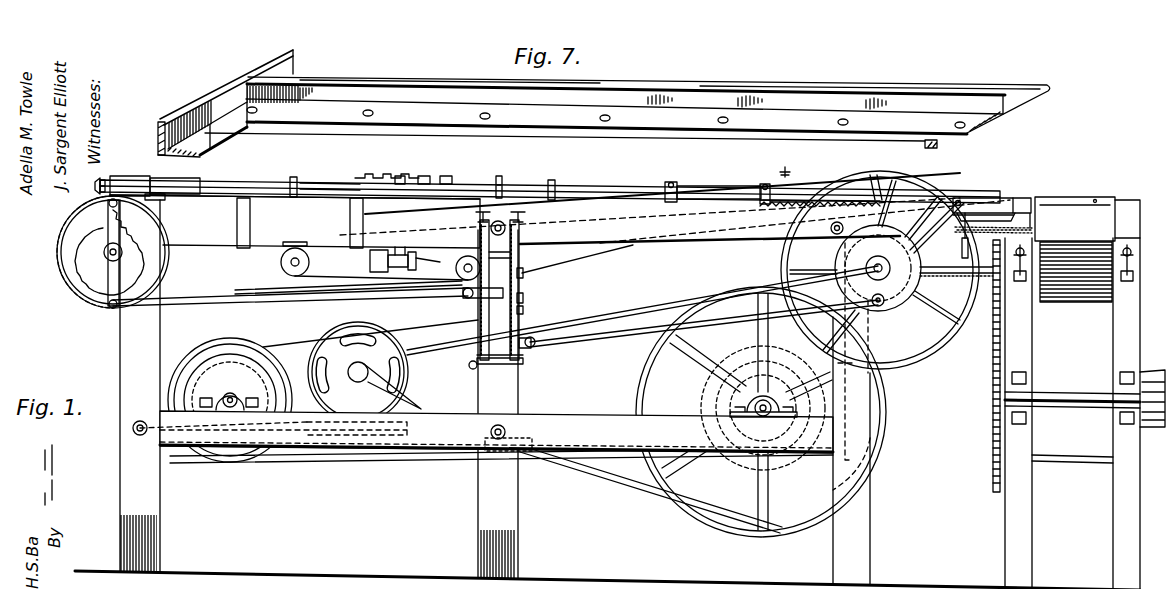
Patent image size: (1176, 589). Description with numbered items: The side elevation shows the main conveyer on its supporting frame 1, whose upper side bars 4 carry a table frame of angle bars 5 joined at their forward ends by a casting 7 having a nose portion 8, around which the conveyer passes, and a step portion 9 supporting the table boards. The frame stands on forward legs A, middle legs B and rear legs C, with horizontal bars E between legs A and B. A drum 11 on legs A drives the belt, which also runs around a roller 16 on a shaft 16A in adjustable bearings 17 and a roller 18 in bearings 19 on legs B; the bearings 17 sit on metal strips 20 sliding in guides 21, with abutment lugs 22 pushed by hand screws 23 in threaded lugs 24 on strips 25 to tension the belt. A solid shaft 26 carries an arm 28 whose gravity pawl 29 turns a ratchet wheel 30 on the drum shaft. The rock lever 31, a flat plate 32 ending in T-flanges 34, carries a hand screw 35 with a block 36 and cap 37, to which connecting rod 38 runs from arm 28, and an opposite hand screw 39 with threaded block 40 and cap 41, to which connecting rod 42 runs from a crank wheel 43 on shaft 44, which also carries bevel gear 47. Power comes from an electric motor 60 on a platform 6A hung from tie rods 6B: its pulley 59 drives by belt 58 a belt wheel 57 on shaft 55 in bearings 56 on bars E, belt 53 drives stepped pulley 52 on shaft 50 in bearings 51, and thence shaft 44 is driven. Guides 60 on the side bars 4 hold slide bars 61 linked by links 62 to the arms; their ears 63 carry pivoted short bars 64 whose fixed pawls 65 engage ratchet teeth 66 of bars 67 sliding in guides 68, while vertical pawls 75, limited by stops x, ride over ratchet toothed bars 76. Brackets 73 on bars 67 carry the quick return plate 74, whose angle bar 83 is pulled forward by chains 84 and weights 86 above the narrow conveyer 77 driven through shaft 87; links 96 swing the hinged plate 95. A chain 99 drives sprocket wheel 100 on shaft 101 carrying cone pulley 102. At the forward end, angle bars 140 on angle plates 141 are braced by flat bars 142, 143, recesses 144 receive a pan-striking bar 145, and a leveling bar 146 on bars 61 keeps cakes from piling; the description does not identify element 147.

In FIG. 1, the supporting frame 1 is at (368, 526).
In FIG. 1, the upper side bars 4 is at (668, 246).
In FIG. 7, the angle bars 5 is at (248, 80).
In FIG. 7, the casting 7 is at (412, 93).
In FIG. 7, the nose portion 8 is at (733, 84).
In FIG. 7, the step portion 9 is at (576, 118).
In FIG. 1, the drum 11 is at (62, 246).
In FIG. 1, the roller 16 is at (281, 264).
In FIG. 1, the shaft 16A is at (298, 278).
In FIG. 1, the adjustable bearings 17 is at (295, 248).
In FIG. 1, the roller 18 is at (456, 268).
In FIG. 1, the bearings 19 is at (466, 298).
In FIG. 1, the metal strips 20 is at (232, 246).
In FIG. 1, the guides 21 is at (236, 214).
In FIG. 1, the abutment lugs 22 is at (372, 270).
In FIG. 1, the hand screws 23 is at (405, 255).
In FIG. 1, the threaded lugs 24 is at (408, 268).
In FIG. 1, the strips 25 is at (480, 255).
In FIG. 1, the solid shaft 26 is at (104, 255).
In FIG. 1, the arm 28 is at (80, 223).
In FIG. 1, the gravity pawl 29 is at (138, 196).
In FIG. 1, the ratchet wheel 30 is at (90, 268).
In FIG. 1, the rock lever 31 is at (492, 365).
In FIG. 1, the flat vertical plate 32 is at (522, 310).
In FIG. 1, the T-flanges 34 is at (508, 226).
In FIG. 1, the hand screw 35 is at (482, 324).
In FIG. 1, the block 36 is at (522, 275).
In FIG. 1, the cap 37 is at (522, 298).
In FIG. 1, the connecting rod 38 is at (297, 299).
In FIG. 1, the hand screw 39 is at (519, 254).
In FIG. 1, the threaded block 40 is at (528, 350).
In FIG. 1, the cap 41 is at (465, 357).
In FIG. 1, the connecting rod 42 is at (628, 331).
In FIG. 1, the crank wheel 43 is at (892, 305).
In FIG. 1, the shaft 44 is at (866, 268).
In FIG. 1, the bevel gear 47 is at (785, 262).
In FIG. 1, the shaft 50 is at (222, 405).
In FIG. 1, the bearings 51 is at (232, 408).
In FIG. 1, the stepped pulley 52 is at (205, 348).
In FIG. 1, the belt 53 is at (592, 366).
In FIG. 1, the shaft 55 is at (763, 416).
In FIG. 1, the bearings 56 is at (730, 400).
In FIG. 1, the belt wheel 57 is at (672, 490).
In FIG. 1, the belt 58 is at (607, 485).
In FIG. 1, the pulley 59 is at (352, 383).
In FIG. 1, the electric motor 60 is at (292, 180).
In FIG. 1, the slide bars 61 is at (383, 178).
In FIG. 1, the links 62 is at (208, 162).
In FIG. 1, the ears 63 is at (662, 188).
In FIG. 1, the short bars 64 is at (706, 186).
In FIG. 1, the fixed pawls 65 is at (796, 197).
In FIG. 1, the ratchet teeth 66 is at (840, 190).
In FIG. 1, the bars 67 is at (982, 198).
In FIG. 1, the guides 68 is at (880, 190).
In FIG. 1, the depending bracket 73 is at (1040, 205).
In FIG. 1, the horizontal metal plate 74 is at (1012, 224).
In FIG. 1, the vertically disposed pawls 75 is at (766, 184).
In FIG. 1, the ratchet toothed bars 76 is at (780, 222).
In FIG. 1, the narrow endless conveyer 77 is at (1082, 300).
In FIG. 1, the angle bar 83 is at (962, 253).
In FIG. 1, the chain or cord 84 is at (935, 225).
In FIG. 1, the weights 86 is at (890, 413).
In FIG. 1, the shaft 87 is at (940, 275).
In FIG. 1, the metal plate 95 is at (1110, 220).
In FIG. 1, the links 96 is at (1080, 200).
In FIG. 1, the chain 99 is at (992, 362).
In FIG. 1, the sprocket wheel 100 is at (990, 515).
In FIG. 1, the shaft 101 is at (1050, 406).
In FIG. 1, the cone pulley 102 is at (1140, 400).
In FIG. 1, the angle bars 140 is at (235, 182).
In FIG. 1, the angle plates 141 is at (340, 170).
In FIG. 1, the flat bar 142 is at (160, 200).
In FIG. 1, the flat bar 143 is at (438, 172).
In FIG. 1, the semi-circular recesses 144 is at (440, 160).
In FIG. 1, the bar 145 is at (412, 178).
In FIG. 1, the leveling bar 146 is at (494, 172).
In FIG. 1, the guide 147 is at (195, 184).
In FIG. 1, the upright standards or legs A is at (120, 466).
In FIG. 1, the middle uprights or legs B is at (500, 500).
In FIG. 1, the rear standards or legs C is at (850, 515).
In FIG. 1, the horizontal bars E is at (350, 448).
In FIG. 1, the platform 6A is at (223, 460).
In FIG. 1, the tie rods 6B is at (132, 428).
In FIG. 1, the stops x is at (604, 377).